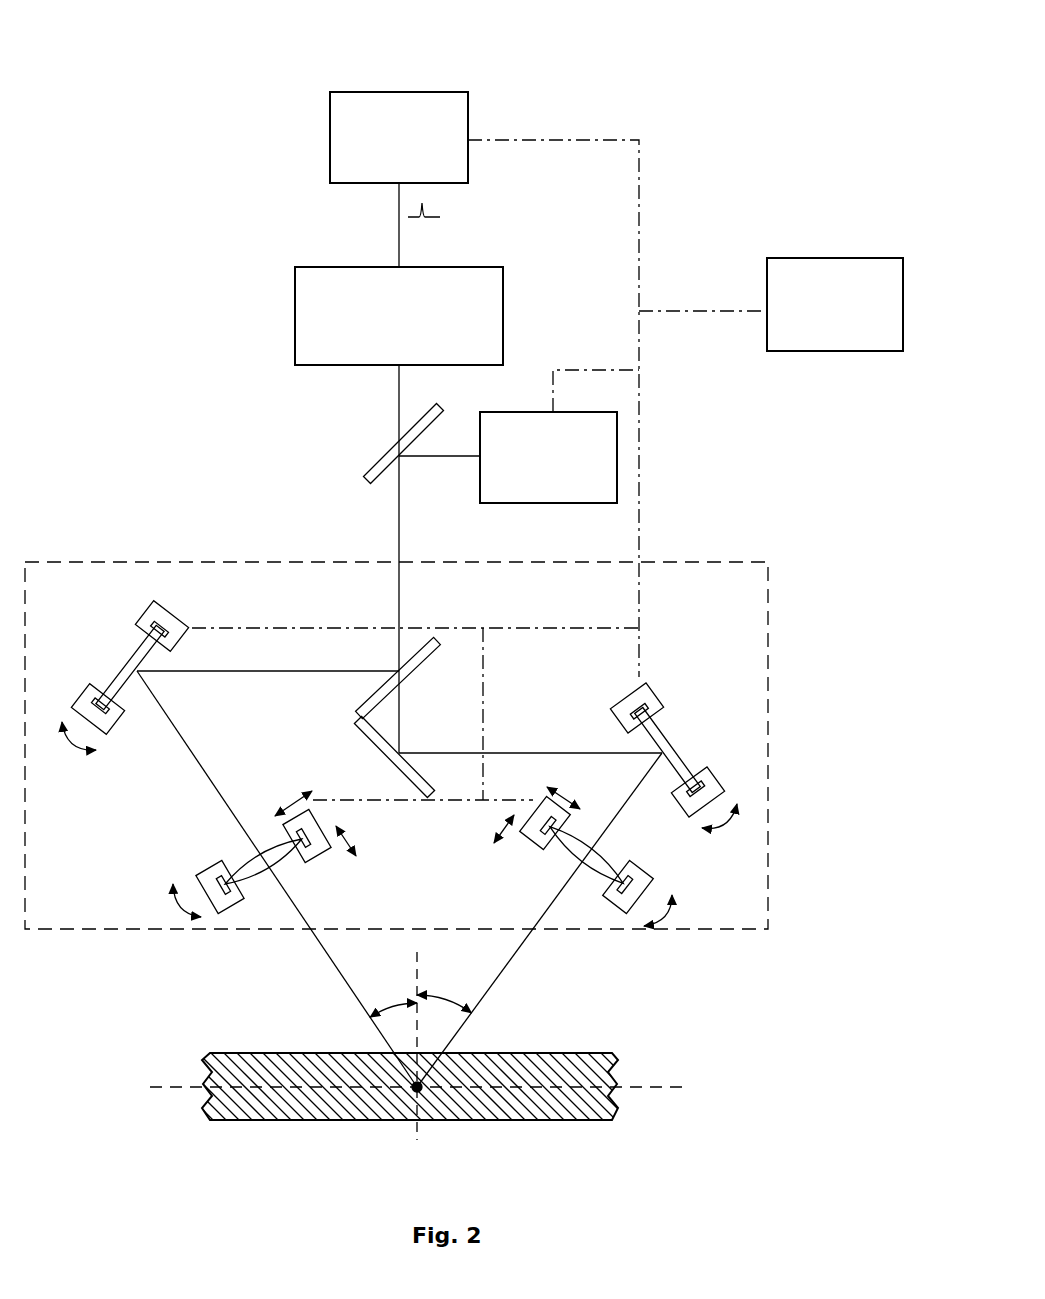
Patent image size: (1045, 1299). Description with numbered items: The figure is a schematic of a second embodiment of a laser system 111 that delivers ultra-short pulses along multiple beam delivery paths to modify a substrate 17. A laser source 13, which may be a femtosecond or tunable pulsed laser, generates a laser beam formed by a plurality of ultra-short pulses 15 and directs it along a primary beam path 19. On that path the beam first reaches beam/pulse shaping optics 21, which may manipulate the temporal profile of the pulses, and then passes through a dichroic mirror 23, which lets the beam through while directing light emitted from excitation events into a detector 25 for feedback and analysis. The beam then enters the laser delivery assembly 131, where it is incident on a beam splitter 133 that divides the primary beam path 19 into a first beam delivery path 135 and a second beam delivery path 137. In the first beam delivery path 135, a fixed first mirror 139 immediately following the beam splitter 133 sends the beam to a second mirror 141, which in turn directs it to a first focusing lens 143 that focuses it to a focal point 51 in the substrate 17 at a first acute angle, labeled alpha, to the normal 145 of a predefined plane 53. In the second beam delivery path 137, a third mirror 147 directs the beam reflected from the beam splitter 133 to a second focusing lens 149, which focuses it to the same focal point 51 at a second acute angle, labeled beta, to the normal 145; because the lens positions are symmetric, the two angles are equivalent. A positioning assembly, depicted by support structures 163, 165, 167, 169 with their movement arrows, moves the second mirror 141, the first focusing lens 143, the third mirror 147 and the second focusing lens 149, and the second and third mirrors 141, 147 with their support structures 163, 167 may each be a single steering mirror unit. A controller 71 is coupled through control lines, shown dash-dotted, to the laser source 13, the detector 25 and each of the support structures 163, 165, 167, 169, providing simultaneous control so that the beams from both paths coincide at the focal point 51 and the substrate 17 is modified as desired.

The laser system 111 is at (155, 36).
The laser source 13 is at (466, 92).
The ultra-short pulses 15 is at (440, 203).
The primary beam path 19 is at (397, 237).
The beam/pulse shaping optics 21 is at (487, 266).
The controller 71 is at (870, 258).
The dichroic mirror 23 is at (363, 472).
The detector 25 is at (617, 441).
The laser delivery assembly 131 is at (768, 572).
The beam splitter 133 is at (430, 634).
The first beam delivery path 135 is at (400, 700).
The second beam delivery path 137 is at (282, 670).
The first mirror 139 is at (388, 736).
The second mirror 141 is at (664, 733).
The support structure 163 is at (725, 778).
The first focusing lens 143 is at (583, 840).
The support structure 165 is at (652, 871).
The third mirror 147 is at (133, 650).
The support structure 167 is at (153, 612).
The second focusing lens 149 is at (256, 840).
The support structure 169 is at (202, 870).
The normal 145 is at (420, 957).
The substrate 17 is at (545, 1053).
The predefined plane 53 is at (648, 1087).
The focal point 51 is at (417, 1090).